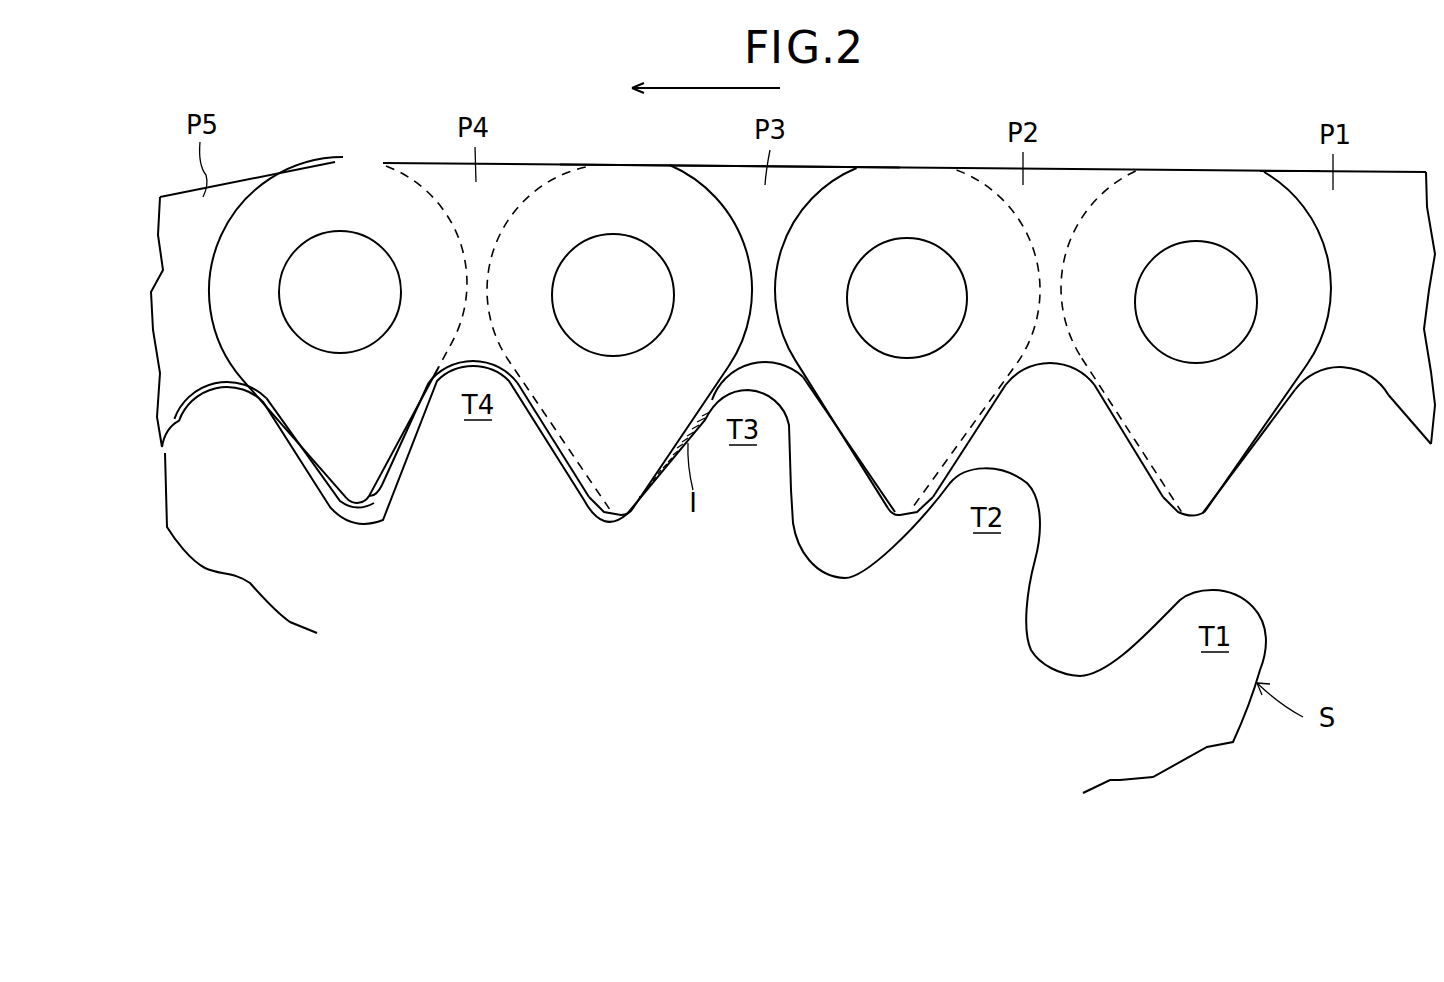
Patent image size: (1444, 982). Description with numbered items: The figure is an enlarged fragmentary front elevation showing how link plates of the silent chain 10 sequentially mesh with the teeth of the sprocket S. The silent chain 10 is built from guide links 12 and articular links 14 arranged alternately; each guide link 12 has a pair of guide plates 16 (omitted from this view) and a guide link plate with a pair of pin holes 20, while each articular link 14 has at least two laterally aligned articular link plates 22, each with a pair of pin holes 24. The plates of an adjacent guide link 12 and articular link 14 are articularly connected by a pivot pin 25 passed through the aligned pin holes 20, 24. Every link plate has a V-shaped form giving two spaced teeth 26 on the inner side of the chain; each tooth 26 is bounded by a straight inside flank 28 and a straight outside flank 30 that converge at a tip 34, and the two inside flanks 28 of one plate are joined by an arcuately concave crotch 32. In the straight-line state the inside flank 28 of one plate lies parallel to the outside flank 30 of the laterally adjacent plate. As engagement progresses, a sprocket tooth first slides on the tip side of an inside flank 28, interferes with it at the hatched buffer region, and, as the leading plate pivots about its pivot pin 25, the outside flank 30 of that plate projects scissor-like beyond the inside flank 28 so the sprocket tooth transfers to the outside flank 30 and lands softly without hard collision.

The silent chain 10 is at (917, 145).
The guide link 12 is at (1366, 171).
The articular link 14 is at (1069, 168).
The guide plate 16 is at (1287, 170).
The pin hole 20 is at (1146, 288).
The articular link plate 22 is at (605, 195).
The pin hole 24 is at (1222, 258).
The pivot pin 25 is at (345, 250).
The tooth 26 is at (866, 490).
The inside flank 28 is at (410, 427).
The outside flank 30 is at (407, 470).
The crotch 32 is at (1053, 365).
The tip 34 is at (378, 510).